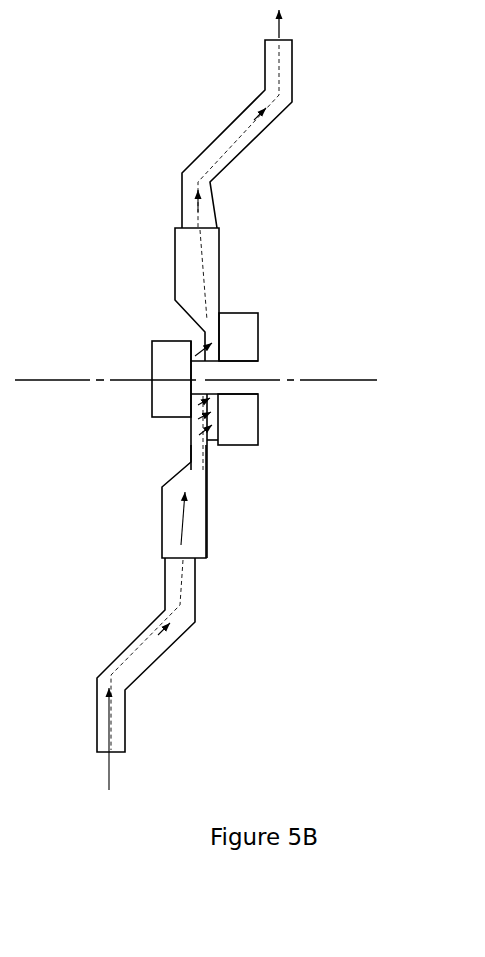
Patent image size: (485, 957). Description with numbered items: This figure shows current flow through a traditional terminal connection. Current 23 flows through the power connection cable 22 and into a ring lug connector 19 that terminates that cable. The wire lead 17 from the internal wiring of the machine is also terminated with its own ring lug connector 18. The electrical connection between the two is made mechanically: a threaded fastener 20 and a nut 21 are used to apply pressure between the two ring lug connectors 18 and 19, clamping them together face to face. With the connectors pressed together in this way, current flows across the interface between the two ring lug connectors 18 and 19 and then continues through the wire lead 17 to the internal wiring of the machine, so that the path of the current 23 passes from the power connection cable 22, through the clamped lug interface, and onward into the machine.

The wire lead 17 is at (294, 78).
The ring lug connector 18 is at (221, 283).
The ring lug connector 19 is at (209, 503).
The threaded fastener 20 is at (151, 353).
The nut 21 is at (259, 327).
The power connection cable 22 is at (149, 627).
The current 23 is at (114, 775).